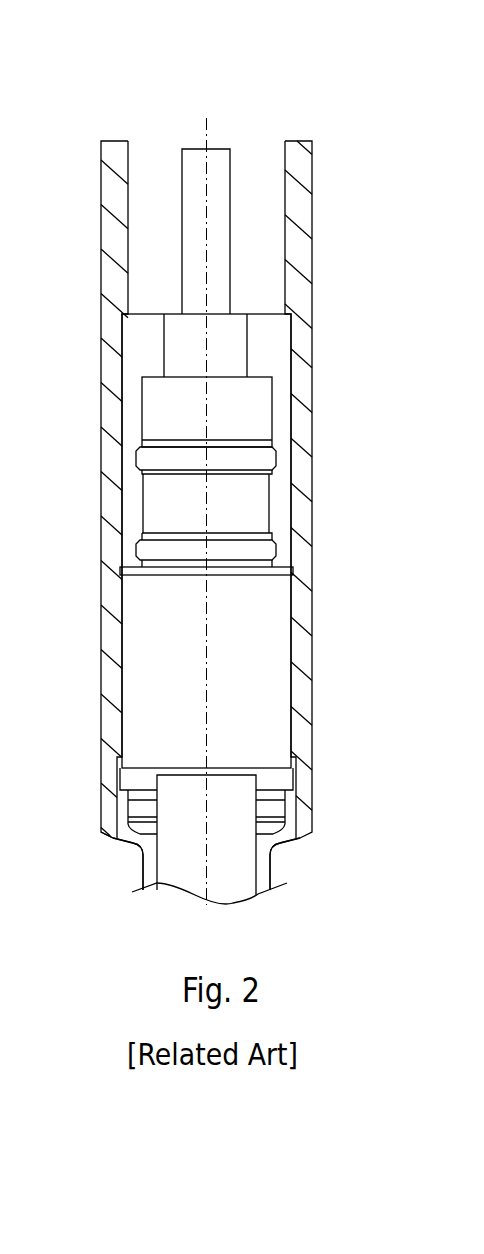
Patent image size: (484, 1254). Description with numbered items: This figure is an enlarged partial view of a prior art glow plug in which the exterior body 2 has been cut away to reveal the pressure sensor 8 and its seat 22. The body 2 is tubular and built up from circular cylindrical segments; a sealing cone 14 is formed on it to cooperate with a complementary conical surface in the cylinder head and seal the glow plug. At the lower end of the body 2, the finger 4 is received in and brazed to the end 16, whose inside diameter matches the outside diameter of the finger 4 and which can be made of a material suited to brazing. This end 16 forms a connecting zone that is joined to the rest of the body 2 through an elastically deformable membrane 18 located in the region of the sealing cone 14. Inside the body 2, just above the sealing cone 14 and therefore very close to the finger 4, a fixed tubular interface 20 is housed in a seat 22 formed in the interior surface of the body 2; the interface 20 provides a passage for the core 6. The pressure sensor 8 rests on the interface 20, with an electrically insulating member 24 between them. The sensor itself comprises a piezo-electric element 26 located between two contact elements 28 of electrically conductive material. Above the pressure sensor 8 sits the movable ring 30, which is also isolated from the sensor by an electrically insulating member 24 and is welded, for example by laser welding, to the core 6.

The body 2 is at (102, 440).
The finger 4 is at (247, 895).
The core 6 is at (222, 153).
The pressure sensor 8 is at (220, 506).
The sealing cone 14 is at (105, 834).
The end 16 is at (145, 890).
The membrane 18 is at (298, 838).
The interface 20 is at (277, 655).
The seat 22 is at (118, 795).
The electrically insulating member 24 is at (278, 446).
The piezo-electric element 26 is at (258, 495).
The contact elements 28 is at (177, 462).
The ring 30 is at (260, 414).